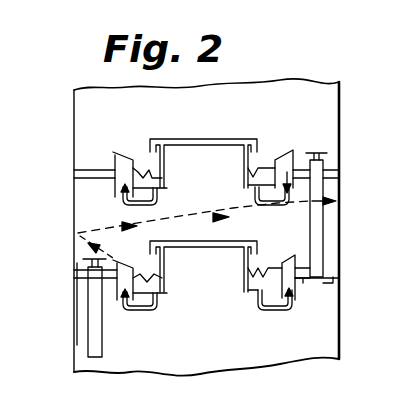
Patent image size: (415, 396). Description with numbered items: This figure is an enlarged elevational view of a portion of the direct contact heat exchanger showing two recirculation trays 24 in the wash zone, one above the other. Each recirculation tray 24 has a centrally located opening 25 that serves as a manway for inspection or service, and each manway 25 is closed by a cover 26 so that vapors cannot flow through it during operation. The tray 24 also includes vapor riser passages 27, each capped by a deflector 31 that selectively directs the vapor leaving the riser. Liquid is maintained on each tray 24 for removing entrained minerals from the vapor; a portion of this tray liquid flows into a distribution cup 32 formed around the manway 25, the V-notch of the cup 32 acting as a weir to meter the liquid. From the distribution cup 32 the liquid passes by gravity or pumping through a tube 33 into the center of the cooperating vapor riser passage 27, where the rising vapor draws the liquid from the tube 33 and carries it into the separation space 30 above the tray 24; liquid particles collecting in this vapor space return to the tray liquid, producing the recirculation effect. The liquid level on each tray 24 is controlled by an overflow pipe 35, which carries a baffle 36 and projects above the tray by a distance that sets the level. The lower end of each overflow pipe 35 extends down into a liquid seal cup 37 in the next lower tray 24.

The recirculation tray 24 is at (78, 181).
The centrally located opening 25 is at (165, 154).
The cover 26 is at (178, 138).
The vapor riser passage 27 is at (114, 198).
The separation space 30 is at (313, 119).
The deflector 31 is at (132, 153).
The distribution cup 32 is at (166, 190).
The tube 33 is at (134, 203).
The overflow pipe 35 is at (323, 227).
The baffle 36 is at (326, 153).
The liquid seal cup 37 is at (333, 283).